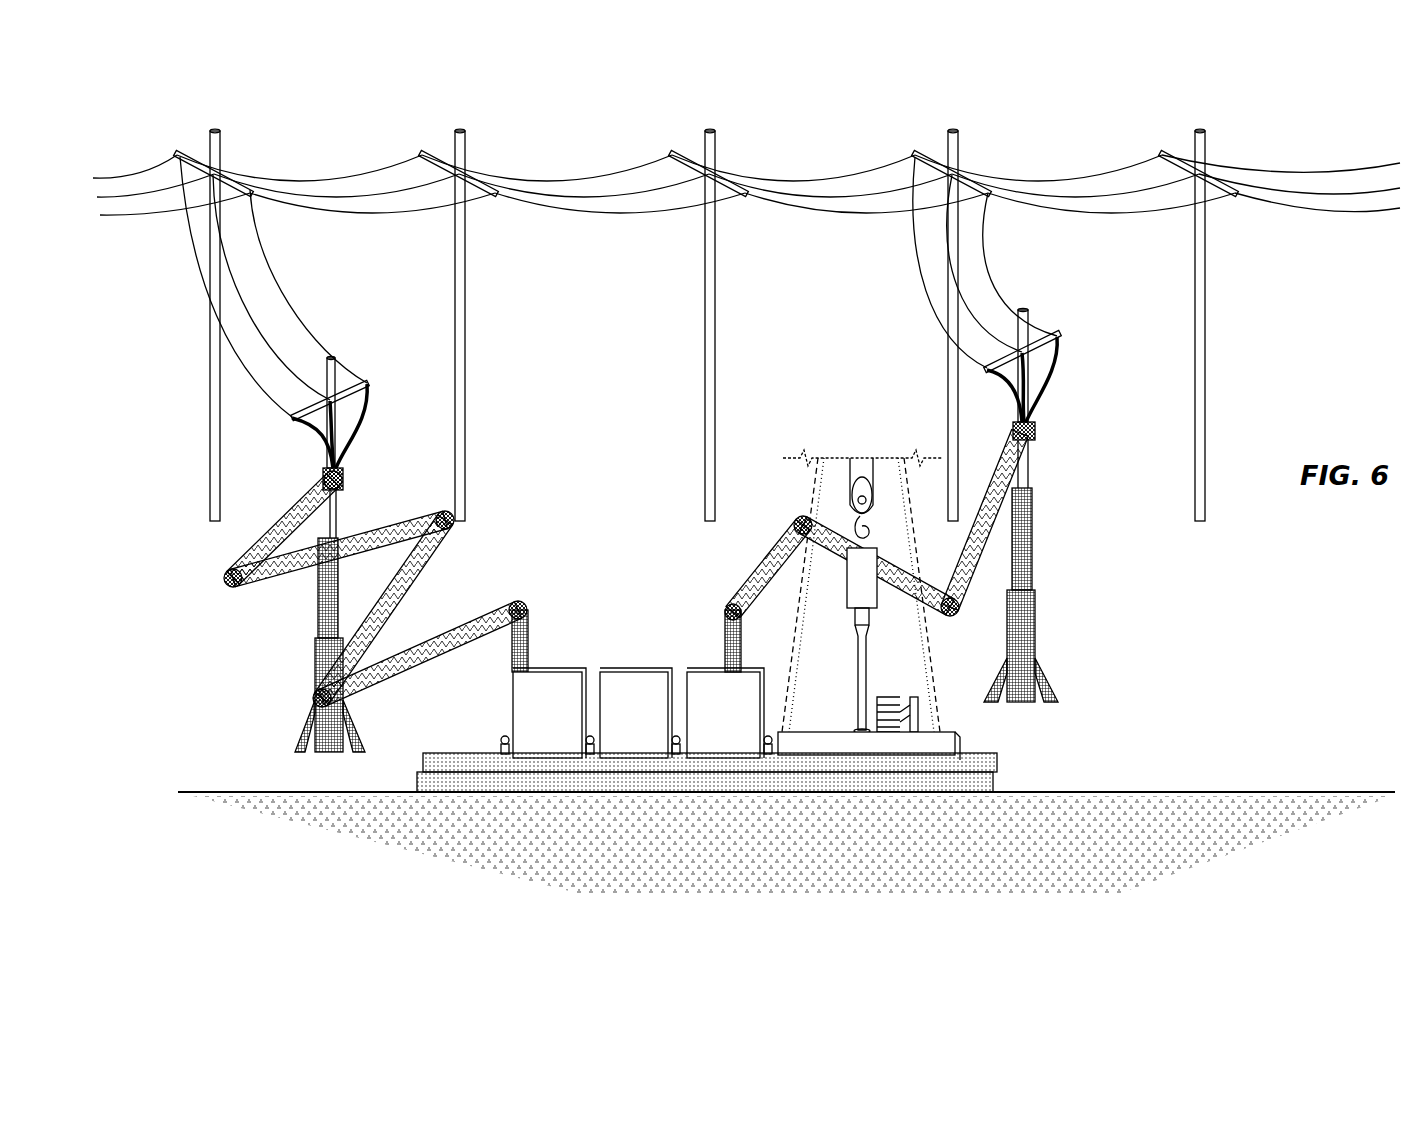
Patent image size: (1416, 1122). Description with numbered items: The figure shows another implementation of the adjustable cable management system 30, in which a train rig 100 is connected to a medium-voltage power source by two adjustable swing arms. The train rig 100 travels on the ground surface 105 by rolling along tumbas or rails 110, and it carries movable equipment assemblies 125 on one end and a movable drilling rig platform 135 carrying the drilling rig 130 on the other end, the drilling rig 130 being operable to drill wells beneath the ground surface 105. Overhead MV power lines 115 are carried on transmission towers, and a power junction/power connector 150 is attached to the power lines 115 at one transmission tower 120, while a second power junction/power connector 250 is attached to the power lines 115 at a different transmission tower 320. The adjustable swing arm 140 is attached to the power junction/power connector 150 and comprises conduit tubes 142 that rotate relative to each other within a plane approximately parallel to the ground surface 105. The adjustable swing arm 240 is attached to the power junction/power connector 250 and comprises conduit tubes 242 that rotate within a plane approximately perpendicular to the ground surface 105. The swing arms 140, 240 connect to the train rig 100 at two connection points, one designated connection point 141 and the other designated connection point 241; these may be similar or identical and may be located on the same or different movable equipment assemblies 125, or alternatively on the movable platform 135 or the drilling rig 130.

The adjustable cable management system 30 is at (152, 138).
The overhead MV power lines 115 is at (537, 160).
The transmission tower 120 is at (207, 327).
The power junction/power connector 150 is at (430, 355).
The drilling rig 130 is at (857, 448).
The transmission tower 320 is at (947, 415).
The power junction/power connector 250 is at (1078, 336).
The adjustable swing arm 240 is at (772, 538).
The conduit tubes 242 is at (921, 583).
The train rig 100 is at (636, 626).
The adjustable swing arm 140 is at (376, 611).
The connection point 141 is at (537, 663).
The movable equipment assemblies 125 is at (676, 663).
The connection point 241 is at (716, 662).
The conduit tubes 142 is at (268, 550).
The movable drilling rig platform 135 is at (960, 745).
The tumbas or rails 110 is at (998, 762).
The ground surface 105 is at (1365, 787).